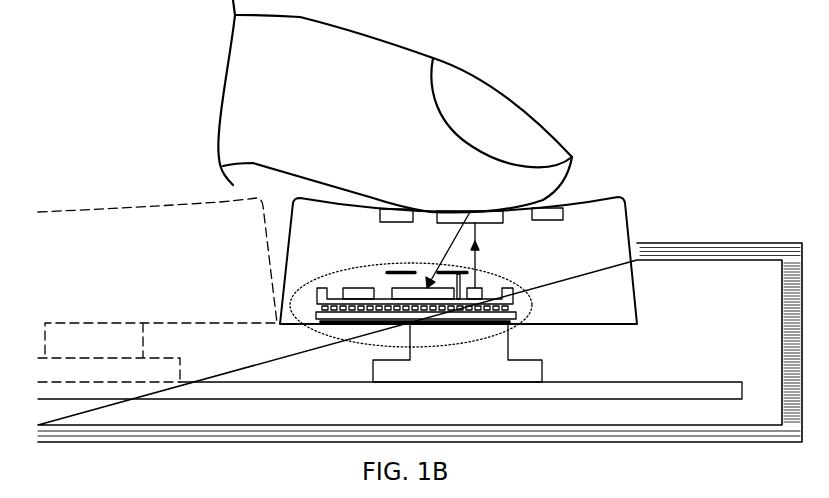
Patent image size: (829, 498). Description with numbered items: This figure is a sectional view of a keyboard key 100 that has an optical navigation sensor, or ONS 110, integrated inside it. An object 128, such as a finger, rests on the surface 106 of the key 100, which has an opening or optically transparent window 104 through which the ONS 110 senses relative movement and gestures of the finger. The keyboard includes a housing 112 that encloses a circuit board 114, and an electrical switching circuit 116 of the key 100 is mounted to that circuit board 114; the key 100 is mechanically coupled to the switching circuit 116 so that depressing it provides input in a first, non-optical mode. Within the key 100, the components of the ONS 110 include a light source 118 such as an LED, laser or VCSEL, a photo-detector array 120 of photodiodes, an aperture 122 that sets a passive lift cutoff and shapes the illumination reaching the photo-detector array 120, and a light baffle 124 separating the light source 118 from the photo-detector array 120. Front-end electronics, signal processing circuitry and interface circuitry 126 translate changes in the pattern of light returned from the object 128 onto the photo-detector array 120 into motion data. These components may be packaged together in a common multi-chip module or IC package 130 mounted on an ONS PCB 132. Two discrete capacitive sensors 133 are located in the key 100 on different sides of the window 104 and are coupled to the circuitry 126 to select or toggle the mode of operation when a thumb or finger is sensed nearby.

The key 100 is at (598, 142).
The window 104 is at (490, 223).
The surface 106 is at (600, 199).
The optical navigation sensor 110 is at (537, 305).
The housing 112 is at (719, 241).
The circuit board 114 is at (711, 381).
The switching circuit 116 is at (543, 371).
The light source 118 is at (483, 287).
The photo-detector array 120 is at (392, 288).
The aperture 122 is at (424, 278).
The light baffle 124 is at (460, 299).
The signal processing circuitry 126 is at (355, 288).
The object 128 is at (340, 118).
The package 130 is at (320, 288).
The ONS PCB 132 is at (323, 338).
The capacitive sensors 133 is at (380, 218).